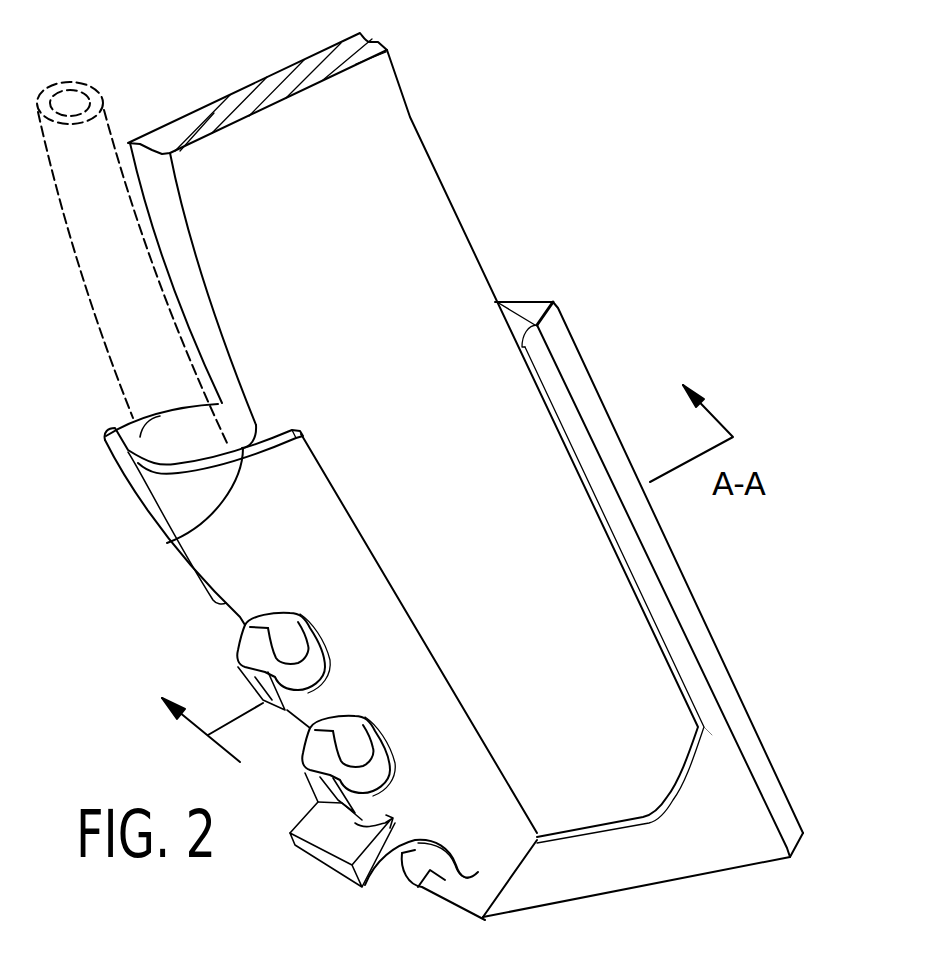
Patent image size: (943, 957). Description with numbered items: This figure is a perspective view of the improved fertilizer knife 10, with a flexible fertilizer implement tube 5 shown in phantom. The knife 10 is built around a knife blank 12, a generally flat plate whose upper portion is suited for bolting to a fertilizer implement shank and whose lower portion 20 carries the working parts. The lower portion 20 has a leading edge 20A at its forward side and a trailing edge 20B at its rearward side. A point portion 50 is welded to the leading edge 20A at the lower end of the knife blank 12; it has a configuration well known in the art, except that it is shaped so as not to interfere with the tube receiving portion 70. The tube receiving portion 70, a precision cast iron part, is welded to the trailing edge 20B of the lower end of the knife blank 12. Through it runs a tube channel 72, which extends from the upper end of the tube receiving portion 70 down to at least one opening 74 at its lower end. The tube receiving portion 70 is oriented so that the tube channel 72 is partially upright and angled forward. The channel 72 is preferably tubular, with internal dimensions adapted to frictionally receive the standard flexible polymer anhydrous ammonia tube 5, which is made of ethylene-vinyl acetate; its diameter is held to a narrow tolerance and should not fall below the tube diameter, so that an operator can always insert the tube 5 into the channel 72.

The fertilizer implement tube 5 is at (100, 343).
The fertilizer knife 10 is at (503, 96).
The knife blank 12 is at (332, 258).
The lower portion 20 is at (585, 721).
The leading edge 20A is at (488, 288).
The trailing edge 20B is at (200, 528).
The point portion 50 is at (735, 826).
The tube receiving portion 70 is at (397, 688).
The tube channel 72 is at (181, 441).
The opening 74 is at (247, 645).